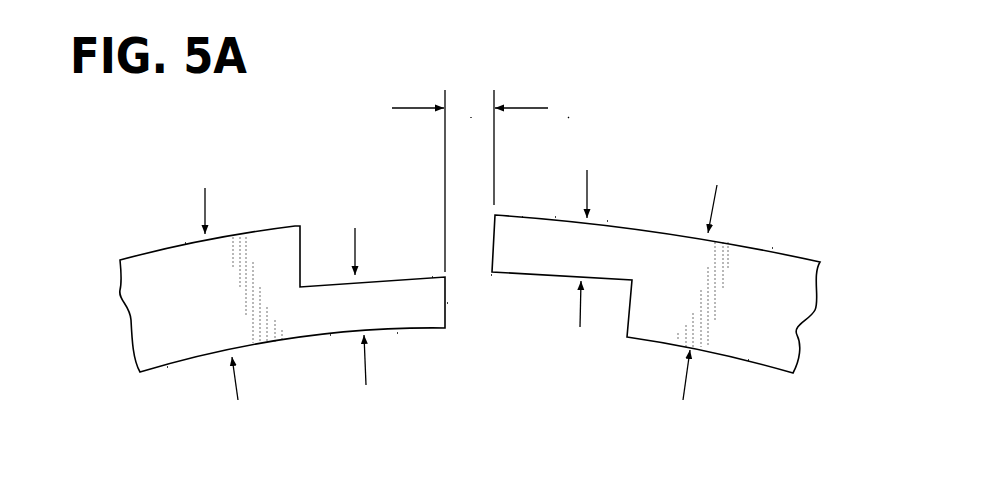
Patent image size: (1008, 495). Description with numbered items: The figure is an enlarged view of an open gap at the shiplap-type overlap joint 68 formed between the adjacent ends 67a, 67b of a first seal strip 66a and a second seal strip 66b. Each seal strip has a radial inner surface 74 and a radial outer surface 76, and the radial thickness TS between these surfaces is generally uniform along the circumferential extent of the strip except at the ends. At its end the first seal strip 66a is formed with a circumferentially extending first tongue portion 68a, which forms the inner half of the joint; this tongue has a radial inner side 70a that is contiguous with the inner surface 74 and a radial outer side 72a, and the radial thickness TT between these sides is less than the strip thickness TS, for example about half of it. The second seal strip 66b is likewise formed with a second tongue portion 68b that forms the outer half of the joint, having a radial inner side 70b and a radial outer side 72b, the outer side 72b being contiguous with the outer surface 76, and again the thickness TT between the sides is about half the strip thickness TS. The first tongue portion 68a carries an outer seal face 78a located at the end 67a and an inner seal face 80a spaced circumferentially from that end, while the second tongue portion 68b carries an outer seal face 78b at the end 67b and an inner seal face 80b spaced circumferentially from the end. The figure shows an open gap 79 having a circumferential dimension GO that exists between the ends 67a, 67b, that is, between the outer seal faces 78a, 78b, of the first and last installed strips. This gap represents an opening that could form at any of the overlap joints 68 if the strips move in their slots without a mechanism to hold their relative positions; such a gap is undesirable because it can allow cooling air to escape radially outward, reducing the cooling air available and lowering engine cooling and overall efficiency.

The first seal strip 66a is at (148, 250).
The second seal strip 66b is at (812, 254).
The end of first seal strip 67a is at (432, 277).
The end of second seal strip 67b is at (522, 217).
The overlap joint 68 is at (569, 116).
The first tongue portion 68a is at (330, 335).
The second tongue portion 68b is at (607, 221).
The radial inner side of first tongue portion 70a is at (397, 333).
The radial inner side of second tongue portion 70b is at (533, 275).
The radial outer side of first tongue portion 72a is at (395, 278).
The radial outer side of second tongue portion 72b is at (555, 217).
The radial inner surface of seal strip 74 is at (167, 367).
The radial outer surface of seal strip 76 is at (185, 243).
The outer seal face of first tongue portion 78a is at (447, 303).
The outer seal face of second tongue portion 78b is at (491, 275).
The open gap 79 is at (471, 117).
The inner seal face of first tongue portion 80a is at (299, 238).
The inner seal face of second tongue portion 80b is at (630, 336).
The circumferential dimension of open gap GO is at (418, 107).
The radial thickness of seal strip TS is at (237, 400).
The radial thickness of tongue portion TT is at (365, 370).